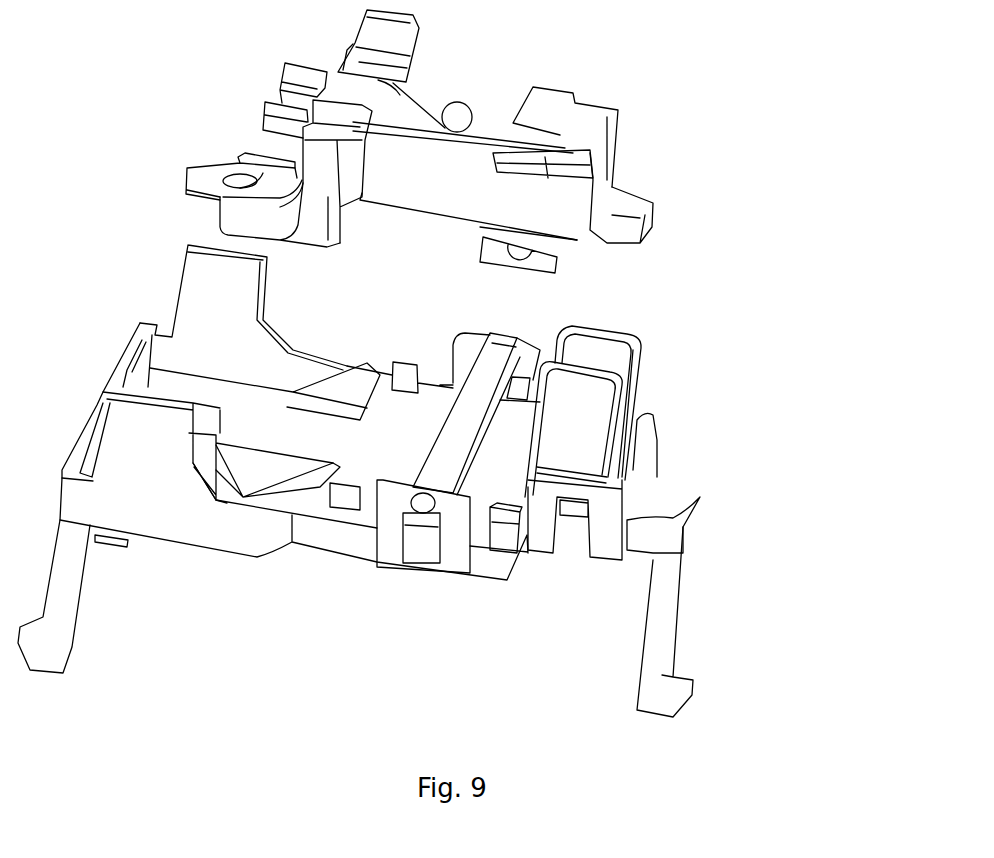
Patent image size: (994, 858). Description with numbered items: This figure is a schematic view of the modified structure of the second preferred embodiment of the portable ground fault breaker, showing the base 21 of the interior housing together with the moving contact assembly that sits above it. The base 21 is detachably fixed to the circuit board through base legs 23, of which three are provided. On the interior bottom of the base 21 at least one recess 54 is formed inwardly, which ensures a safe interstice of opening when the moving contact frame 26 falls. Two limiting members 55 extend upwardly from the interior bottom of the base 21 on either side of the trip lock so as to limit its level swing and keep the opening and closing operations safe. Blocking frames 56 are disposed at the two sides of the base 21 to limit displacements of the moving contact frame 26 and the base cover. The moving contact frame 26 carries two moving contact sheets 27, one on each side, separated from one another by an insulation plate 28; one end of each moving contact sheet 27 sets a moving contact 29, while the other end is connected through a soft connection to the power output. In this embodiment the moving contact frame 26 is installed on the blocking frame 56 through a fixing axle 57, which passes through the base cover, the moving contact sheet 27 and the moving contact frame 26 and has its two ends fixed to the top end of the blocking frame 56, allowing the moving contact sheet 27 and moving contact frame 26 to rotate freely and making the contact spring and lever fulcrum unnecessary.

The base 21 is at (337, 455).
The base leg 23 is at (663, 607).
The moving contact frame 26 is at (505, 152).
The moving contact sheet 27 is at (550, 222).
The insulation plate 28 is at (397, 98).
The moving contact 29 is at (240, 180).
The recess 54 is at (220, 485).
The limiting member 55 is at (640, 367).
The blocking frame 56 is at (230, 310).
The fixing axle 57 is at (448, 460).